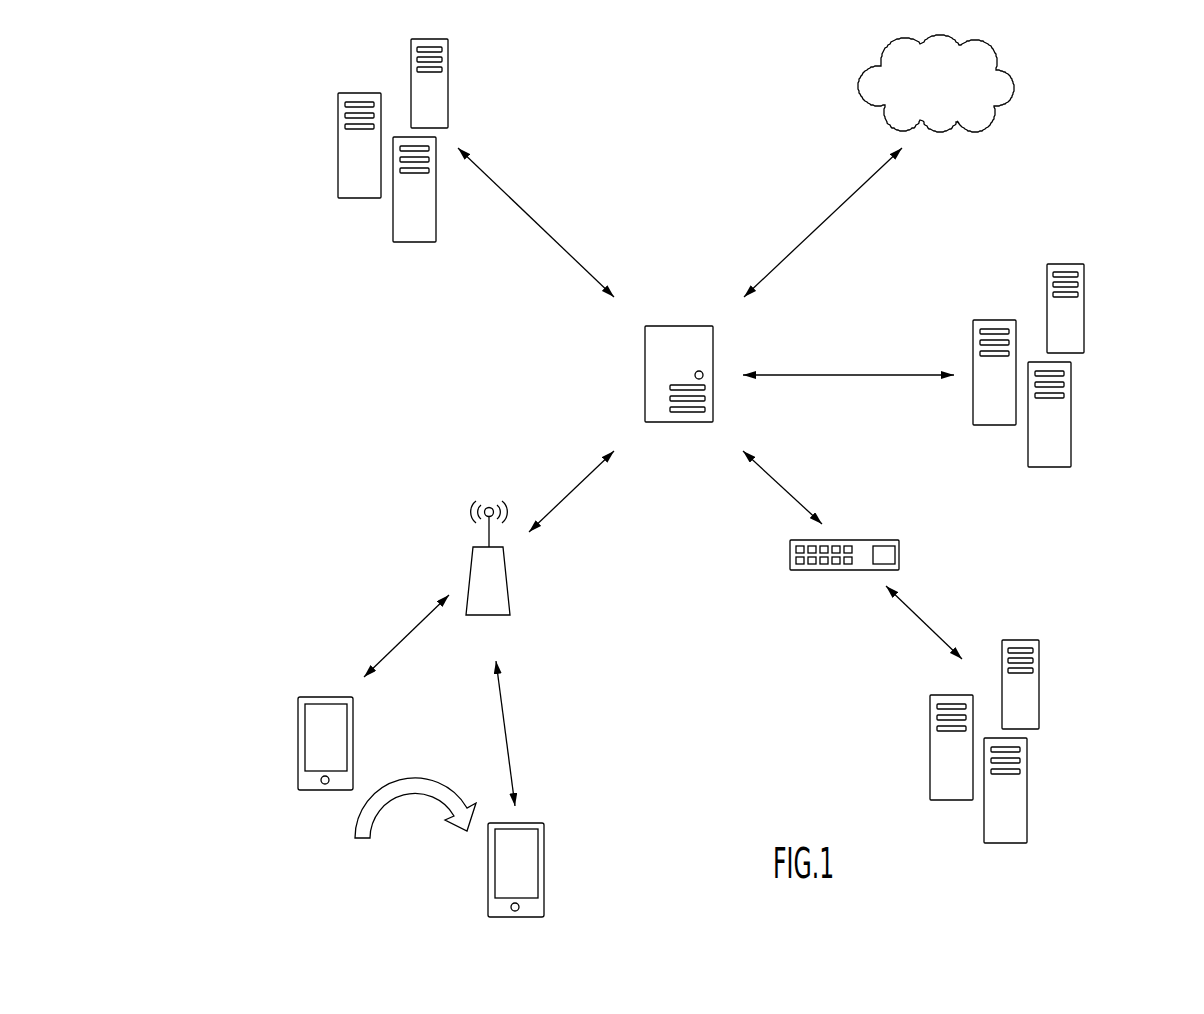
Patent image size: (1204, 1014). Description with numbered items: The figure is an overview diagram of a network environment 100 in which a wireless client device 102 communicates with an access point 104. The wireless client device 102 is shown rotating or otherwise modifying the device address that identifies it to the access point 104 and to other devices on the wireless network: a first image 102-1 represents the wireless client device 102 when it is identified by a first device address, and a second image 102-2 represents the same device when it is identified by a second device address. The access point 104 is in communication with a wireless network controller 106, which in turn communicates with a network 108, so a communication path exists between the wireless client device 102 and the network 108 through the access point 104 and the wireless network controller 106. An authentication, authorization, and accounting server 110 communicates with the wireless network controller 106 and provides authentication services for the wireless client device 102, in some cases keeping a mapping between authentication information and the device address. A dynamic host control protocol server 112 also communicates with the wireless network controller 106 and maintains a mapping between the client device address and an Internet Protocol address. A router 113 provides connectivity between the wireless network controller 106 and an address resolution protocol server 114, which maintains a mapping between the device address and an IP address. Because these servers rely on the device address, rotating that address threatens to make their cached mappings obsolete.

The network environment 100 is at (134, 196).
The wireless client device 102 is at (492, 947).
The first image of the wireless client device 102-1 is at (298, 735).
The second image of the wireless client device 102-2 is at (570, 845).
The access point 104 is at (530, 600).
The wireless network controller 106 is at (645, 388).
The network 108 is at (859, 85).
The authentication, authorization, and accounting server 110 is at (318, 112).
The dynamic host control protocol server 112 is at (1102, 381).
The router 113 is at (899, 555).
The address resolution protocol server 114 is at (1062, 740).